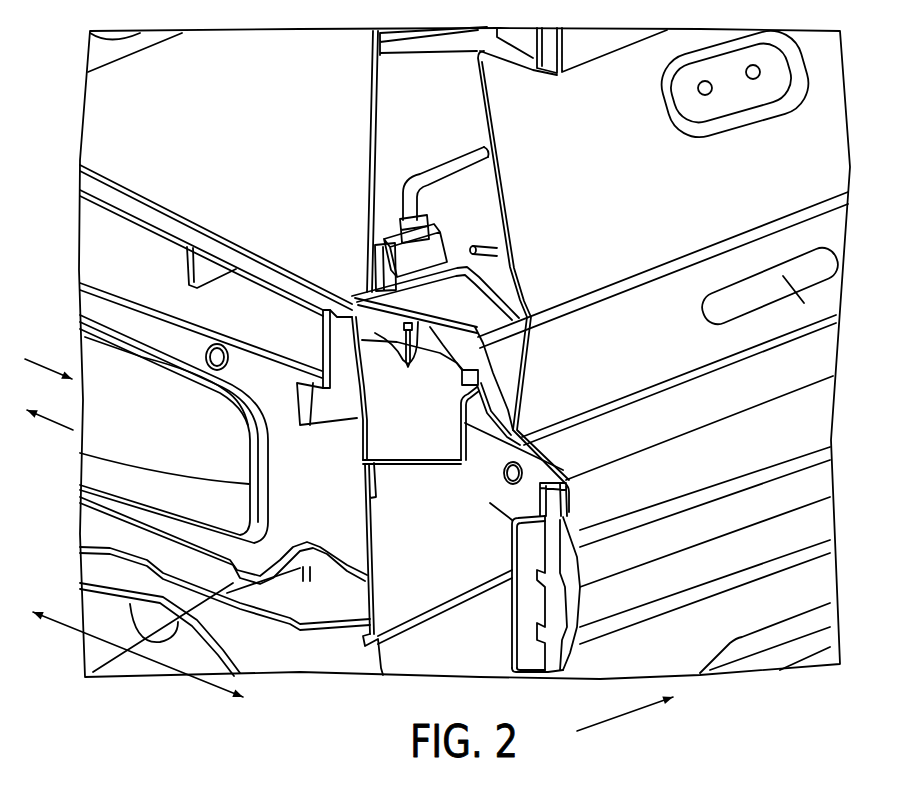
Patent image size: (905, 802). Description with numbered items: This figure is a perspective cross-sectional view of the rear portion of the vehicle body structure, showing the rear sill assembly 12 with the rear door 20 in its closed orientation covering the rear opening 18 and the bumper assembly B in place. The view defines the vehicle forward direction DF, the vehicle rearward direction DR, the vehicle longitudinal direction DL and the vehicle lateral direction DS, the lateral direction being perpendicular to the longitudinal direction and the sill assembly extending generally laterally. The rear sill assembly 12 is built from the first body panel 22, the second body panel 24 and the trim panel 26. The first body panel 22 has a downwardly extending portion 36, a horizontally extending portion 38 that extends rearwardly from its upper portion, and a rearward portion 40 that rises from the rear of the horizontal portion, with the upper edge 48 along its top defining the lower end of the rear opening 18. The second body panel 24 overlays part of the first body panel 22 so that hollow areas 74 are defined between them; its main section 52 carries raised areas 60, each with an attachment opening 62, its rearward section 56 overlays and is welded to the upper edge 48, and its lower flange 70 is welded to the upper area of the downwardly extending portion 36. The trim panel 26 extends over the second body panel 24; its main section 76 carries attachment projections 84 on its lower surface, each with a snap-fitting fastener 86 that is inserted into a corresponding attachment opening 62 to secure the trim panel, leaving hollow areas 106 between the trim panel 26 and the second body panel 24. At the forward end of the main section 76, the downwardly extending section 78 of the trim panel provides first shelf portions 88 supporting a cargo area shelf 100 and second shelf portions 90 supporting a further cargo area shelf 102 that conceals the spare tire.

The rear sill assembly 12 is at (381, 420).
The rear opening 18 is at (388, 242).
The rear door 20 is at (787, 162).
The first body panel 22 is at (414, 590).
The second body panel 24 is at (393, 389).
The trim panel 26 is at (373, 300).
The downwardly extending portion 36 is at (403, 571).
The horizontally extending portion 38 is at (430, 466).
The rearward portion 40 is at (477, 443).
The upper edge 48 is at (480, 380).
The main section 52 is at (530, 335).
The rearward section 56 is at (485, 346).
The raised area 60 is at (417, 352).
The attachment opening 62 is at (432, 302).
The lower flange 70 is at (365, 477).
The hollow areas 74 is at (387, 423).
The main section 76 is at (440, 327).
The downwardly extending section 78 is at (323, 347).
The attachment projections 84 is at (388, 347).
The snap-fitting fastener 86 is at (408, 368).
The first shelf portions 88 is at (324, 318).
The second shelf portions 90 is at (313, 362).
The cargo area shelf 100 is at (123, 157).
The cargo area shelf 102 is at (115, 255).
The hollow areas 106 is at (320, 308).
The bumper assembly B is at (800, 425).
The vehicle rearward direction DR is at (43, 363).
The vehicle forward direction DF is at (53, 423).
The vehicle longitudinal direction DL is at (60, 624).
The vehicle lateral direction DS is at (613, 717).